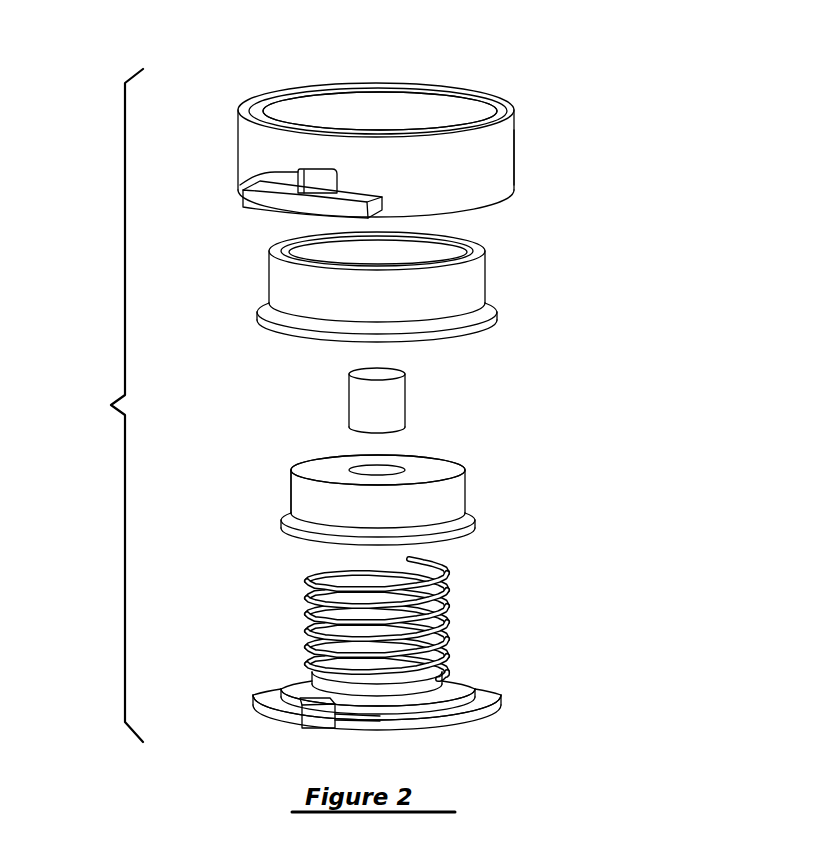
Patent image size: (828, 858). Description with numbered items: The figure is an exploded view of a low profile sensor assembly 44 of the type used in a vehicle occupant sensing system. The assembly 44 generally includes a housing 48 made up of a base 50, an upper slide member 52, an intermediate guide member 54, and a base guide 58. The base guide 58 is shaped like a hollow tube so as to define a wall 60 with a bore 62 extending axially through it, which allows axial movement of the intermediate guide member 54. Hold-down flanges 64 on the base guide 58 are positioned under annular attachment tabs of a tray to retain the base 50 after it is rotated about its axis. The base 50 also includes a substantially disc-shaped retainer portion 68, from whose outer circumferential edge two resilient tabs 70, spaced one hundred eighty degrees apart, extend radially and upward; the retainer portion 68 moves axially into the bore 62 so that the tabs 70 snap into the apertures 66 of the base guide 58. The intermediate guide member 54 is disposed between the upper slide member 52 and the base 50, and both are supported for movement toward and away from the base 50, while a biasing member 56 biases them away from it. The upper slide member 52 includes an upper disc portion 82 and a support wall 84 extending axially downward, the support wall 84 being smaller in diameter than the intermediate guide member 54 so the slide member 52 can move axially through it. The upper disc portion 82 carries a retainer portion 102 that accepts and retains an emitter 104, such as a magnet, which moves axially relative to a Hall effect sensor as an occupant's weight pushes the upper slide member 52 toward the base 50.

The low profile sensor assembly 44 is at (105, 405).
The housing 48 is at (578, 338).
The base 50 is at (487, 690).
The upper slide member 52 is at (440, 498).
The intermediate guide member 54 is at (480, 283).
The biasing member 56 is at (453, 608).
The base guide 58 is at (500, 133).
The wall 60 is at (503, 177).
The bore 62 is at (368, 92).
The hold-down flanges 64 is at (262, 203).
The apertures 66 is at (248, 186).
The retainer portion 68 is at (437, 721).
The resilient tabs 70 is at (302, 706).
The upper disc portion 82 is at (433, 468).
The support wall 84 is at (307, 498).
The retainer portion 102 is at (368, 468).
The emitter 104 is at (400, 404).